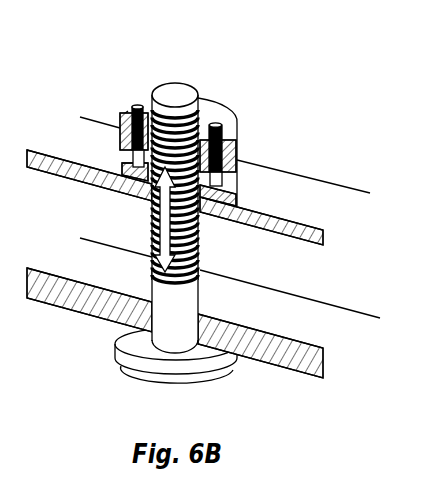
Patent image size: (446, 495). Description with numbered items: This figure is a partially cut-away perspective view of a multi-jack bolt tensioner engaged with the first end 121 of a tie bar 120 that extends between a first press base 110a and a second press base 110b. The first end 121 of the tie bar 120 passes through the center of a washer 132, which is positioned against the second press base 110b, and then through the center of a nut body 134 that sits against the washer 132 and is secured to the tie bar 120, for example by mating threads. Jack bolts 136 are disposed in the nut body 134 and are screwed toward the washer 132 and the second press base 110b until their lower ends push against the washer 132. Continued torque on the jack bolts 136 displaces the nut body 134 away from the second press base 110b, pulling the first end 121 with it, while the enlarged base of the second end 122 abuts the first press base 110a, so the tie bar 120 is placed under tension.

The first end of tie bar 121 is at (175, 92).
The tie bar 120 is at (180, 324).
The second end of tie bar 122 is at (208, 375).
The first press base 110a is at (260, 347).
The second press base 110b is at (278, 226).
The washer 132 is at (232, 200).
The nut body 134 is at (225, 167).
The jack bolts 136 is at (137, 105).